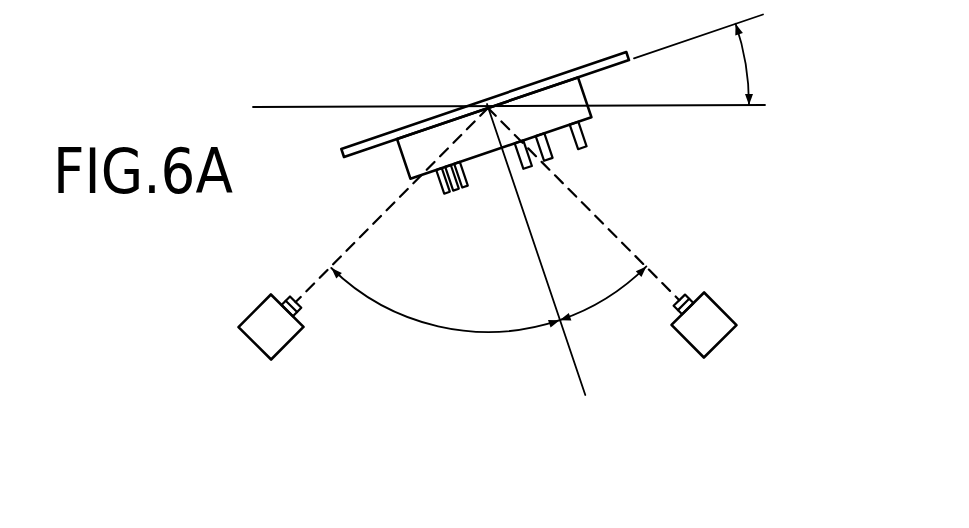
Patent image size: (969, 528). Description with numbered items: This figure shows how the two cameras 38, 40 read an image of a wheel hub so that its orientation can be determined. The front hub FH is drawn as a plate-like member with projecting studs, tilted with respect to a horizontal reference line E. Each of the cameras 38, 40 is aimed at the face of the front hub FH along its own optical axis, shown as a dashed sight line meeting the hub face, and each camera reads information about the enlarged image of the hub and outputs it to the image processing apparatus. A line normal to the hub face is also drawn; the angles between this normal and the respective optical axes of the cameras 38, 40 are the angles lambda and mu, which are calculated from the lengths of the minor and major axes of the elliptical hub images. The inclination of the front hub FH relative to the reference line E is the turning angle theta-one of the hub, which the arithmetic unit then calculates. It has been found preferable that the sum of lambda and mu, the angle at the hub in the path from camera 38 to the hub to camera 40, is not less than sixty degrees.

The camera 38 is at (285, 342).
The camera 40 is at (692, 332).
The front wheel hub FH is at (592, 118).
The horizontal reference line E is at (493, 109).